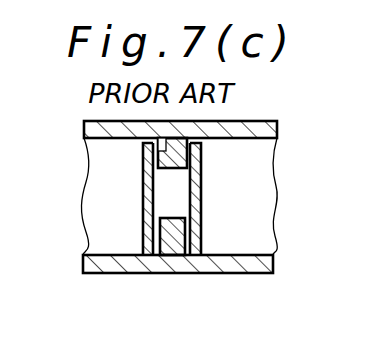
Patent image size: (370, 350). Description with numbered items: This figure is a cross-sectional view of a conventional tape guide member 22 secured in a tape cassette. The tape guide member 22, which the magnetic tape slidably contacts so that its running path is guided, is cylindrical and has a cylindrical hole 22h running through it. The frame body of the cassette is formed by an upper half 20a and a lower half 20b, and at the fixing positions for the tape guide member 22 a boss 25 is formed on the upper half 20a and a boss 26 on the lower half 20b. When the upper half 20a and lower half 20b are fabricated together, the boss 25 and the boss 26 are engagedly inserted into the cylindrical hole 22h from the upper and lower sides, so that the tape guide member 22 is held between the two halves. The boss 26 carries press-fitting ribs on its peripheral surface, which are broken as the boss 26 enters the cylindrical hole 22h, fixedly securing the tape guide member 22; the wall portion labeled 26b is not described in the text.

The upper half 20a is at (248, 129).
The lower half 20b is at (252, 273).
The tape guide member 22 is at (201, 187).
The cylindrical hole 22h is at (157, 182).
The boss 25 is at (164, 150).
The boss 26 is at (174, 233).
The pipe wall 26b is at (152, 236).